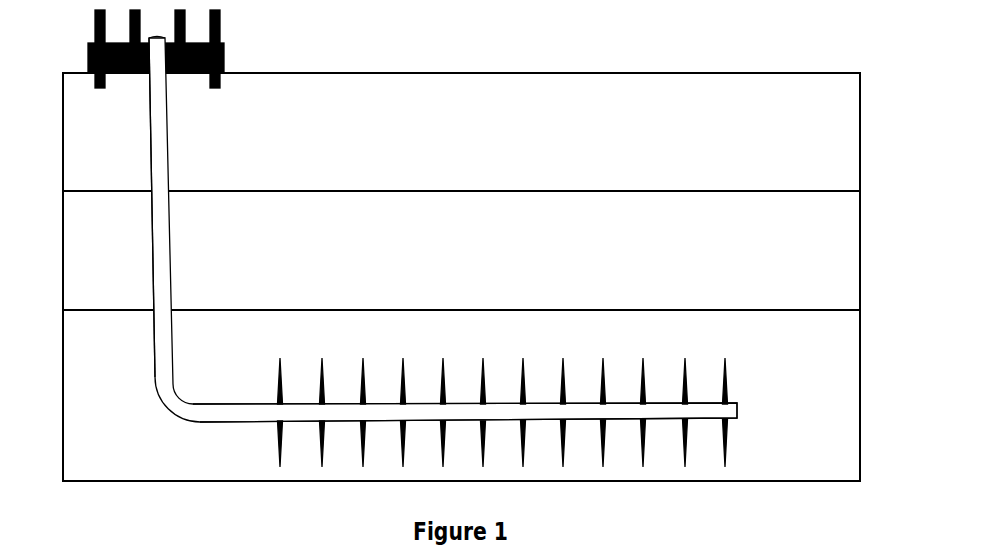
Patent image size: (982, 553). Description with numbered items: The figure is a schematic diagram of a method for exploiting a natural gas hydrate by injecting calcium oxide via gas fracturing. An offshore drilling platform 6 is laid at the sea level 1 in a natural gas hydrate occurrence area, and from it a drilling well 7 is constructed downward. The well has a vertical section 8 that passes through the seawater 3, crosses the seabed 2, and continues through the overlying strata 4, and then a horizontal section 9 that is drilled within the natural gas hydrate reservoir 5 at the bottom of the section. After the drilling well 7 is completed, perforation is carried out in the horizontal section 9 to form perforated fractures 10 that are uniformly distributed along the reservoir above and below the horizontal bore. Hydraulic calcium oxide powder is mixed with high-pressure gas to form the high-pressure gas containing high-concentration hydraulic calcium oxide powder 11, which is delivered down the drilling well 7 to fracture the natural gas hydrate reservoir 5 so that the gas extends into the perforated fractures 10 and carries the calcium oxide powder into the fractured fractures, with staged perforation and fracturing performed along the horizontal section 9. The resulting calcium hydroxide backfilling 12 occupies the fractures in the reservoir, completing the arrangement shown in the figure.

The sea level 1 is at (461, 51).
The seabed 2 is at (461, 168).
The seawater 3 is at (461, 132).
The overlying strata 4 is at (461, 250).
The natural gas hydrate reservoir 5 is at (461, 395).
The offshore drilling platform 6 is at (207, 48).
The drilling well 7 is at (208, 22).
The vertical section of drilling well 8 is at (443, 230).
The horizontal section of drilling well 9 is at (465, 393).
The perforated fracture 10 is at (306, 393).
The high-pressure gas containing high-concentration hydraulic calcium oxide powder 11 is at (131, 207).
The calcium hydroxide backfilling 12 is at (402, 342).